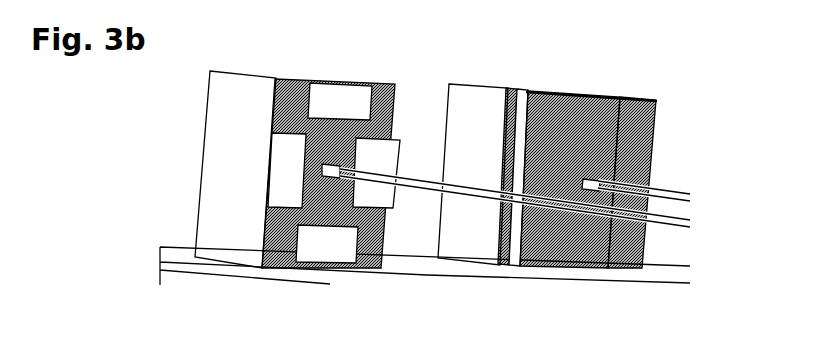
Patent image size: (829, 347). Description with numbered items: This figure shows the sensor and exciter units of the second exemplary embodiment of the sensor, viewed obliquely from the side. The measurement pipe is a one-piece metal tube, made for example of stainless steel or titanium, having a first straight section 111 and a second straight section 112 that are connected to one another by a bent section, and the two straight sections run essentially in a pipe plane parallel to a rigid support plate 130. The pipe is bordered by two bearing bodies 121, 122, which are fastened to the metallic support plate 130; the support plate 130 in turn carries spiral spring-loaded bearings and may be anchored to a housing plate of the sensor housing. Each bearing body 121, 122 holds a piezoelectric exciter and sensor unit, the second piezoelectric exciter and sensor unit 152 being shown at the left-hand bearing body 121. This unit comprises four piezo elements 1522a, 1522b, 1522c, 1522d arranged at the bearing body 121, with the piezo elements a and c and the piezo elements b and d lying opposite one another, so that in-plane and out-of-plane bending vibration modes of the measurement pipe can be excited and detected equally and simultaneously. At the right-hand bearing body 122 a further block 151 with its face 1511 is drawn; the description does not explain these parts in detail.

The first straight section 111 is at (663, 222).
The second straight section 112 is at (683, 197).
The bearing body 121 is at (213, 152).
The bearing body 122 is at (487, 97).
The support plate 130 is at (398, 282).
The pressing block 151 is at (591, 90).
The pressing surface 1511 is at (635, 122).
The second piezoelectric exciter and sensor unit 152 is at (330, 68).
The piezo element 1522a is at (353, 97).
The piezo element 1522b is at (288, 162).
The piezo element 1522c is at (333, 250).
The piezo element 1522d is at (393, 153).